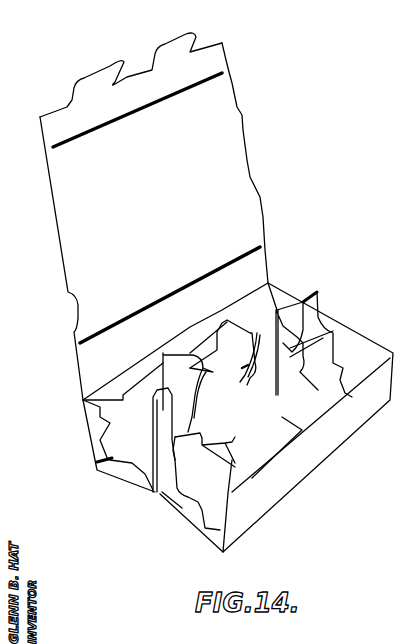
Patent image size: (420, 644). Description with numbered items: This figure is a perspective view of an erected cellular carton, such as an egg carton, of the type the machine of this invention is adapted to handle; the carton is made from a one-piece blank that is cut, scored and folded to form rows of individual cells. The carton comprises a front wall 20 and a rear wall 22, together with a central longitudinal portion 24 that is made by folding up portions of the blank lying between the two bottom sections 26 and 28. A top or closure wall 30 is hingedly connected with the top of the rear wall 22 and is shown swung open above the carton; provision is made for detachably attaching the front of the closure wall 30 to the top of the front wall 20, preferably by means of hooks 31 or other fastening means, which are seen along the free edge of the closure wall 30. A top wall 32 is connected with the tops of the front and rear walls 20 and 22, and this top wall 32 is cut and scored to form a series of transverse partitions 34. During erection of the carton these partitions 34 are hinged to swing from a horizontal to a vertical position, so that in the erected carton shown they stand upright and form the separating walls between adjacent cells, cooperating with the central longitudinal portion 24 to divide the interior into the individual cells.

The front wall 20 is at (320, 457).
The rear wall 22 is at (95, 443).
The central longitudinal portion 24 is at (315, 305).
The bottom section 26 is at (131, 474).
The bottom section 28 is at (185, 506).
The top or closure wall 30 is at (70, 218).
The hooks 31 is at (161, 61).
The top wall 32 is at (303, 440).
The transverse partitions 34 is at (184, 384).